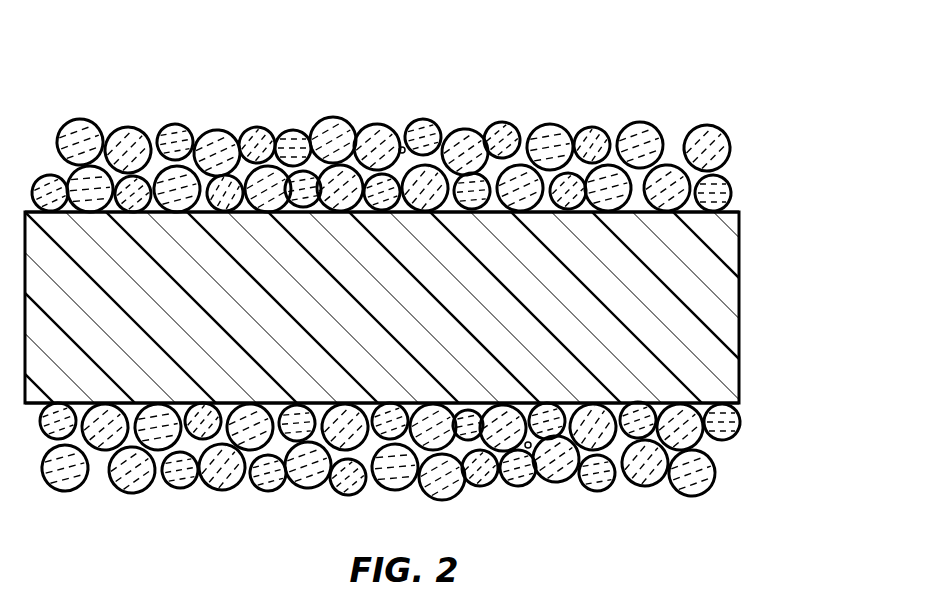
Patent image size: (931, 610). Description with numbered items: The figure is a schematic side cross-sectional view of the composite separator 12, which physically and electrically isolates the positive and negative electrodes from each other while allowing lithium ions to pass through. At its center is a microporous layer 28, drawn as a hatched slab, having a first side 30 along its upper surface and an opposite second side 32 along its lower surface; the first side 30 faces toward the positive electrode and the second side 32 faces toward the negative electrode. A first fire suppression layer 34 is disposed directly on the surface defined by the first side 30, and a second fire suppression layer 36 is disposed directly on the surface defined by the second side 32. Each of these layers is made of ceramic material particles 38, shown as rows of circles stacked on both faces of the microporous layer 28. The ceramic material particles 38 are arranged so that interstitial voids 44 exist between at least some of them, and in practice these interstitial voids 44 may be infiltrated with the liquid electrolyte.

The composite separator 12 is at (108, 82).
The microporous layer 28 is at (739, 328).
The first side 30 is at (653, 212).
The second side 32 is at (105, 403).
The first fire suppression layer 34 is at (752, 118).
The second fire suppression layer 36 is at (757, 402).
The ceramic material particles 38 is at (502, 122).
The interstitial voids 44 is at (405, 160).